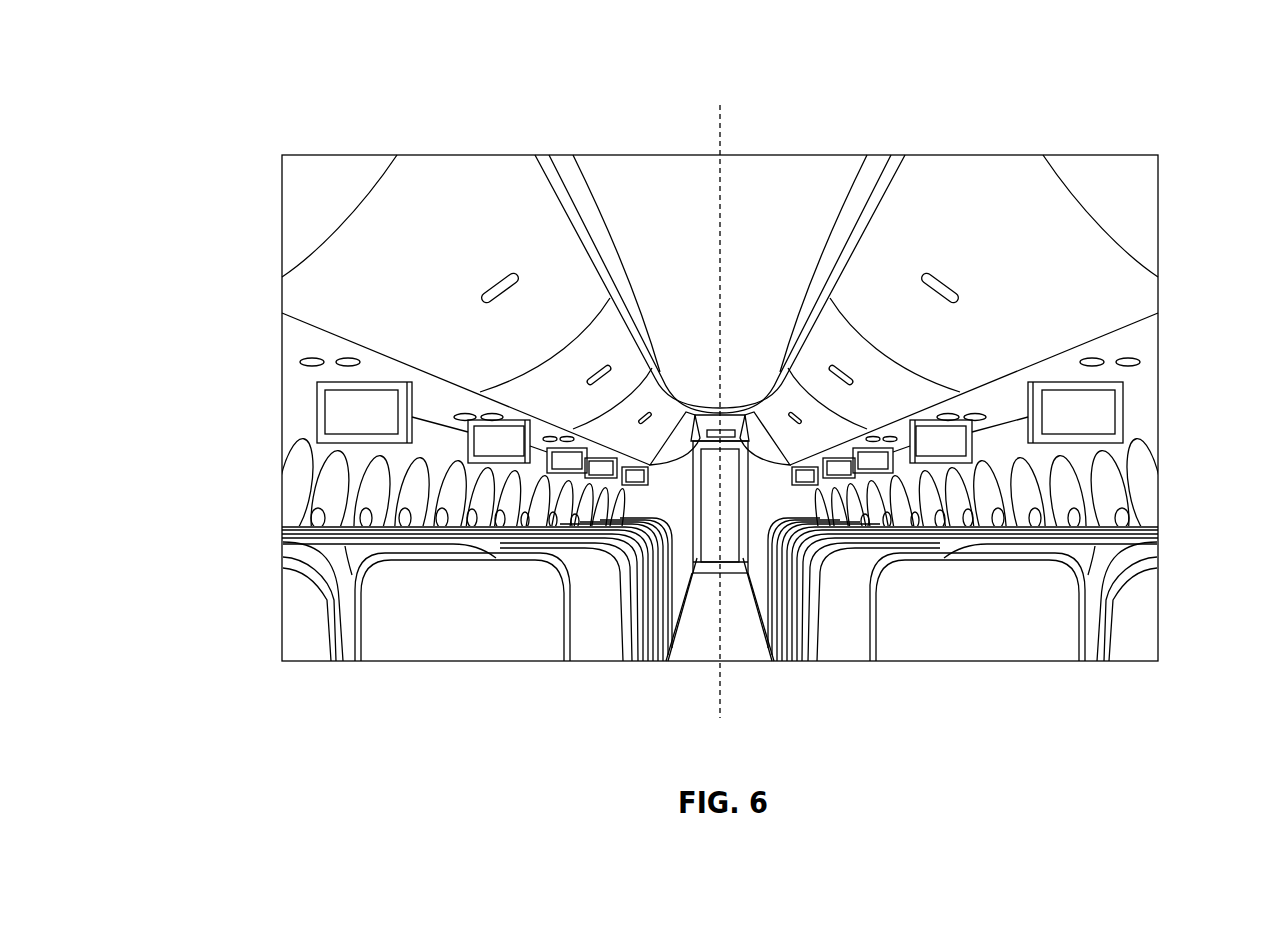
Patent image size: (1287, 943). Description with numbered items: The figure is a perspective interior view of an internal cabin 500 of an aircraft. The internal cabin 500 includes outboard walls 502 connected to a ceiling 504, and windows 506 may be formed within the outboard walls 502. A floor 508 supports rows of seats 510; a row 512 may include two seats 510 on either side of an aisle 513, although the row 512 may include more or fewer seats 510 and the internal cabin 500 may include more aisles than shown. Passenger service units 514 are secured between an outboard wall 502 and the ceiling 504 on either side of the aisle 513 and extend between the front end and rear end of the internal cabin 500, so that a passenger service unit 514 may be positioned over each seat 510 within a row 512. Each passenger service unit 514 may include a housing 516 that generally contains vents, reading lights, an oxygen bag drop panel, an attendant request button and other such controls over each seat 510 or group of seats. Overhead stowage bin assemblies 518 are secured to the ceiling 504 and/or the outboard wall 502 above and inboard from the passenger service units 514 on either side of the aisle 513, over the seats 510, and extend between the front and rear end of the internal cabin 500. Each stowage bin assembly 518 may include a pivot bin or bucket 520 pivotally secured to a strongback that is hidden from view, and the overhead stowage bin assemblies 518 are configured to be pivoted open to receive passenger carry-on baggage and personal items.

The internal cabin 500 is at (700, 392).
The outboard wall 502 is at (293, 415).
The ceiling 504 is at (780, 155).
The window 506 is at (315, 522).
The floor 508 is at (708, 643).
The seat 510 is at (458, 648).
The row 512 is at (290, 620).
The aisle 513 is at (743, 643).
The passenger service unit 514 is at (313, 368).
The housing 516 is at (293, 353).
The overhead stowage bin assembly 518 is at (393, 210).
The pivot bin 520 is at (463, 172).